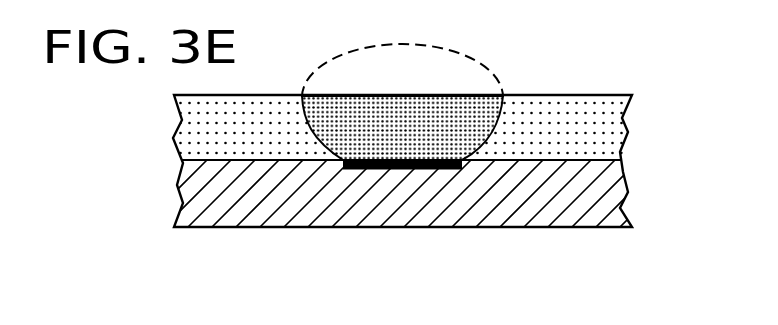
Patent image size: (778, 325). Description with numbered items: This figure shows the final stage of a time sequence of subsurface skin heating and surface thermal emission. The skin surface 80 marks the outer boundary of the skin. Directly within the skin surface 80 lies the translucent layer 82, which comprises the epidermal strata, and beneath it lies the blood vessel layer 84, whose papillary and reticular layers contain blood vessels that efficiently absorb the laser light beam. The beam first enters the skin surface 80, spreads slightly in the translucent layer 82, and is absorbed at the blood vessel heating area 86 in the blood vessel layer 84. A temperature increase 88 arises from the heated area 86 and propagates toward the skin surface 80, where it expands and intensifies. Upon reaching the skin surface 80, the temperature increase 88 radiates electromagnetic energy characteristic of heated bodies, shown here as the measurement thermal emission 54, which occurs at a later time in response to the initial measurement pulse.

The measurement thermal emission 54 is at (470, 63).
The skin surface 80 is at (602, 95).
The translucent layer 82 is at (200, 124).
The blood vessel layer 84 is at (200, 196).
The blood vessel heating area 86 is at (420, 170).
The temperature increase 88 is at (500, 125).